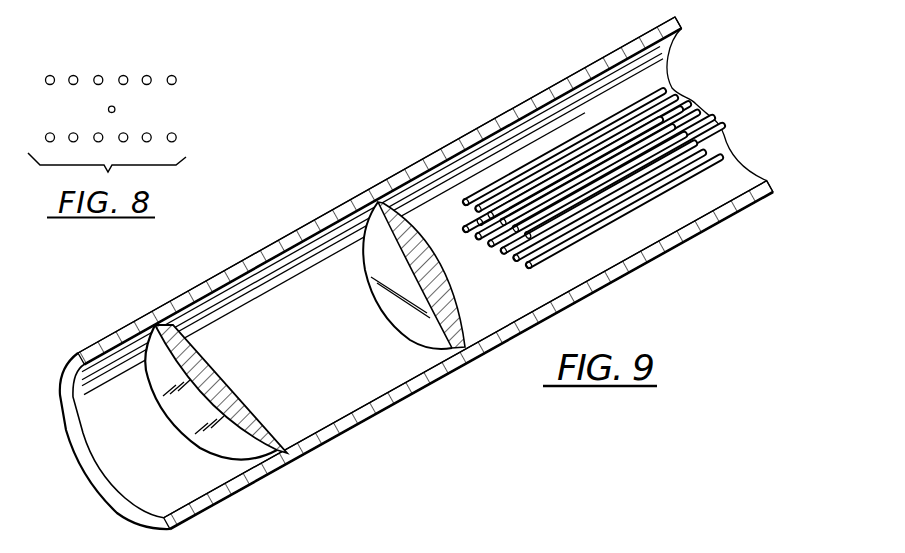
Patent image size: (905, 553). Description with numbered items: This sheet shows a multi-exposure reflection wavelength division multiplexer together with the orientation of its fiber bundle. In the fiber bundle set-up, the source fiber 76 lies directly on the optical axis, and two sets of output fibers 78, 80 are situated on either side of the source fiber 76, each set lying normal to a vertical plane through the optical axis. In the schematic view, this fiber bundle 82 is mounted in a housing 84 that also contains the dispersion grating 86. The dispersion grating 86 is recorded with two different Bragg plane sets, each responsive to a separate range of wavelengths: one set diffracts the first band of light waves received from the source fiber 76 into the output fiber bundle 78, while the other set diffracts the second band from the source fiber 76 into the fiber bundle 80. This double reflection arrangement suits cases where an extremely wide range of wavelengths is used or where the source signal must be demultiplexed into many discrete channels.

In FIG. 8, the source fiber 76 is at (116, 110).
In FIG. 9, the source fiber 76 is at (489, 242).
In FIG. 8, the output fiber bundle 78 is at (174, 77).
In FIG. 9, the output fiber bundle 78 is at (698, 98).
In FIG. 8, the output fiber bundle 80 is at (177, 137).
In FIG. 9, the output fiber bundle 80 is at (530, 265).
In FIG. 9, the fiber bundle 82 is at (456, 209).
In FIG. 9, the housing 84 is at (353, 426).
In FIG. 9, the dispersion grating 86 is at (280, 440).